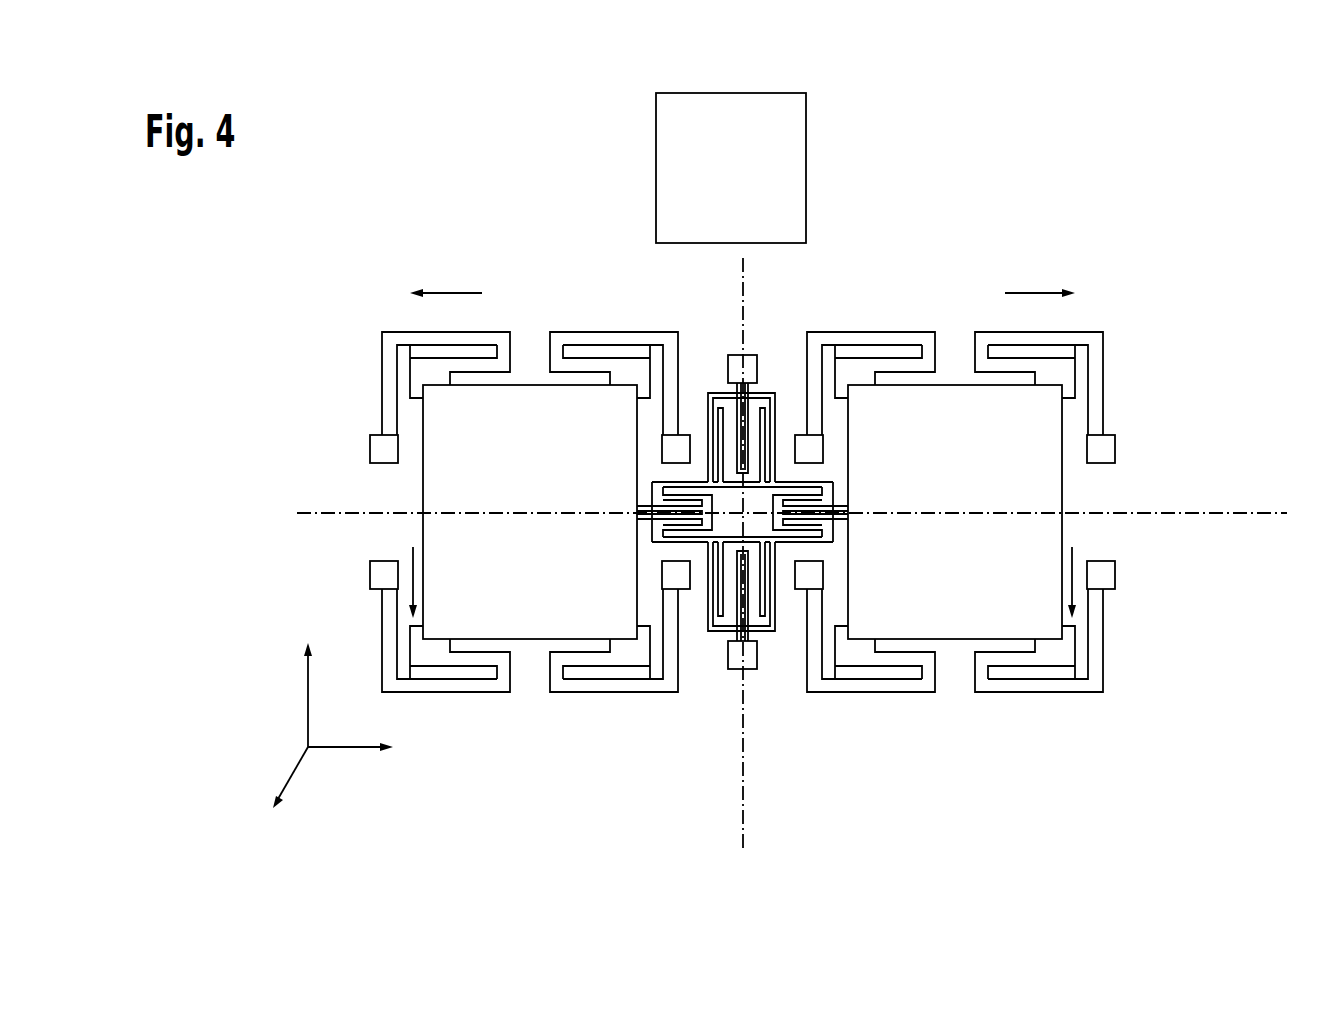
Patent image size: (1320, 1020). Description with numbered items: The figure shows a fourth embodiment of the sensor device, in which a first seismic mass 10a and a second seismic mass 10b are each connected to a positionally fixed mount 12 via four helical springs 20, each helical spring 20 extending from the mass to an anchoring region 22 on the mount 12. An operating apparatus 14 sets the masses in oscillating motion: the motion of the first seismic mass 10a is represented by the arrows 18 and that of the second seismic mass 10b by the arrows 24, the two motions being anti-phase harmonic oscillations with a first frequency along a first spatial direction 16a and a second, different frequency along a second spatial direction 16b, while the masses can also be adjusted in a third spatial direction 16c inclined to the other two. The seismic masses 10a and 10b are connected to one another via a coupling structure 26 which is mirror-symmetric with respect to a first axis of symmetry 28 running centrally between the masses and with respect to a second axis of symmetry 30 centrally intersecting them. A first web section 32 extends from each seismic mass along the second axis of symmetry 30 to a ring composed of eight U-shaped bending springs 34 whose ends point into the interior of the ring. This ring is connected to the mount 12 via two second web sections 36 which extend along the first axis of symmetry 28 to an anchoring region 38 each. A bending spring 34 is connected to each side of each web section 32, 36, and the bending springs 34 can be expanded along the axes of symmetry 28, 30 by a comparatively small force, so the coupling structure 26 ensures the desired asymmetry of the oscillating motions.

The first seismic mass 10a is at (530, 640).
The second seismic mass 10b is at (952, 640).
The mount 12 is at (742, 533).
The operating apparatus 14 is at (806, 178).
The first spatial direction 16a is at (350, 752).
The second spatial direction 16b is at (305, 715).
The third spatial direction 16c is at (295, 770).
The arrows 18 is at (455, 292).
The helical springs 20 is at (382, 390).
The anchoring region 22 is at (378, 450).
The arrows 24 is at (1030, 292).
The coupling structure 26 is at (782, 647).
The first axis of symmetry 28 is at (745, 835).
The second axis of symmetry 30 is at (1268, 510).
The first web section 32 is at (697, 480).
The bending springs 34 is at (797, 483).
The second web sections 36 is at (773, 420).
The anchoring region 38 is at (733, 365).